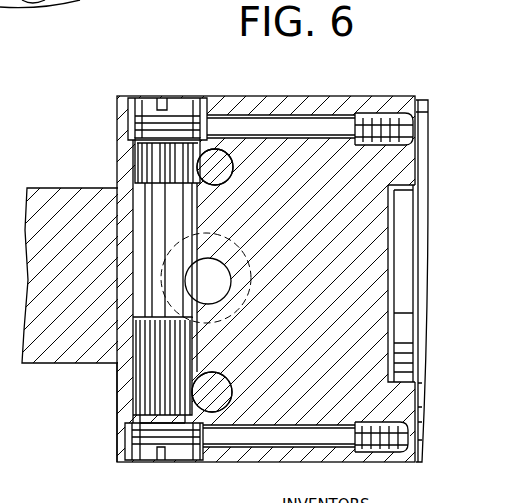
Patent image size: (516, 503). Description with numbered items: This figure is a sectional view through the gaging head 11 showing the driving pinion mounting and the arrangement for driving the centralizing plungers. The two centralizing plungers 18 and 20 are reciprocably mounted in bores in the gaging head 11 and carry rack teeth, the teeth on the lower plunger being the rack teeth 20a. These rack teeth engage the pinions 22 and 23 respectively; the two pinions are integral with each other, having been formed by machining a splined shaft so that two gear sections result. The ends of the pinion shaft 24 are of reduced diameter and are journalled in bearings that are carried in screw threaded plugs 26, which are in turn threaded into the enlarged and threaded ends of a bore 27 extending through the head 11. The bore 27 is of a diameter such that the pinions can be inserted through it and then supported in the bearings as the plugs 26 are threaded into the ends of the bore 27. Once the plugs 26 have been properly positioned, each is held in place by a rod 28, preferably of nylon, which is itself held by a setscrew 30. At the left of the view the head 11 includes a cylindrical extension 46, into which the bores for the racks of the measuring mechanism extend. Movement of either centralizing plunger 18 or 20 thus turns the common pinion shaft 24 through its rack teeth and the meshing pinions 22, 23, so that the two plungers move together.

The gaging head 11 is at (108, 450).
The centralizing plunger 18 is at (222, 172).
The centralizing plunger 20 is at (220, 392).
The rack teeth 20a is at (128, 400).
The pinion 22 is at (145, 160).
The pinion 23 is at (150, 365).
The pinion shaft 24 is at (160, 207).
The screw threaded plug 26 is at (158, 106).
The bore 27 is at (193, 216).
The rod 28 is at (315, 128).
The setscrew 30 is at (374, 118).
The cylindrical extension 46 is at (59, 353).